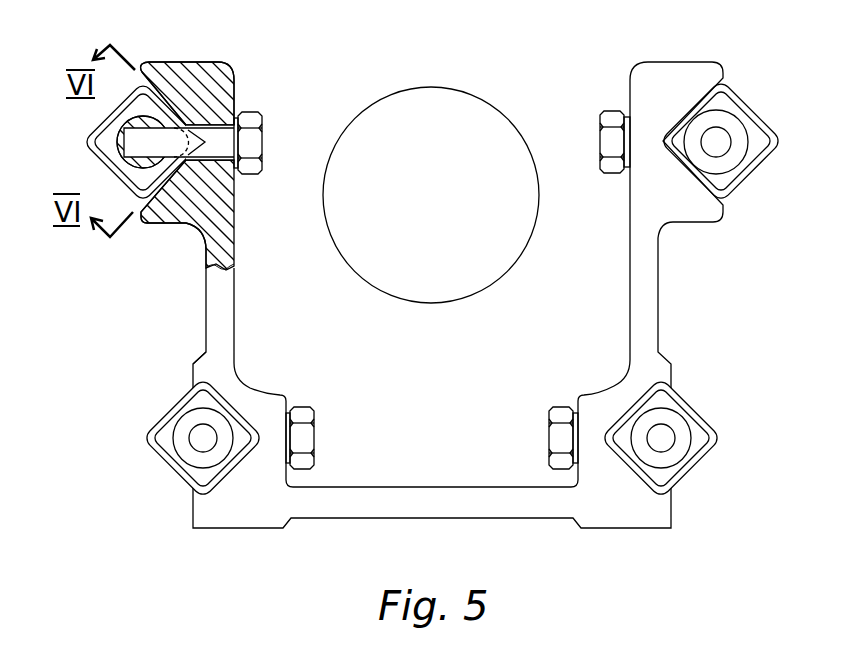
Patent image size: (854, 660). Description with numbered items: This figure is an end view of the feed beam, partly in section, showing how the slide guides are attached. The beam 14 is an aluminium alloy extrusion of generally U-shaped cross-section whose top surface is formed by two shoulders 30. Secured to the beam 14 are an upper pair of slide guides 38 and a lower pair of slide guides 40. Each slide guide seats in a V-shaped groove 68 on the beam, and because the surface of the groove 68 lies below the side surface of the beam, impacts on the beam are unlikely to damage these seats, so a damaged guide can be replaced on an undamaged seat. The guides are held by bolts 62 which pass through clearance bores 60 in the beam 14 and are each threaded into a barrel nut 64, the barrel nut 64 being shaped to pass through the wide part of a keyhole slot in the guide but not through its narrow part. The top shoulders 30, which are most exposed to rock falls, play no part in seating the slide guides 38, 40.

The beam 14 is at (632, 268).
The shoulders 30 is at (183, 62).
The upper pair of slide guides 38 is at (108, 112).
The lower pair of slide guides 40 is at (167, 463).
The clearance bores 60 is at (213, 128).
The bolts 62 is at (262, 142).
The barrel nut 64 is at (120, 177).
The V-shaped groove 68 is at (195, 378).